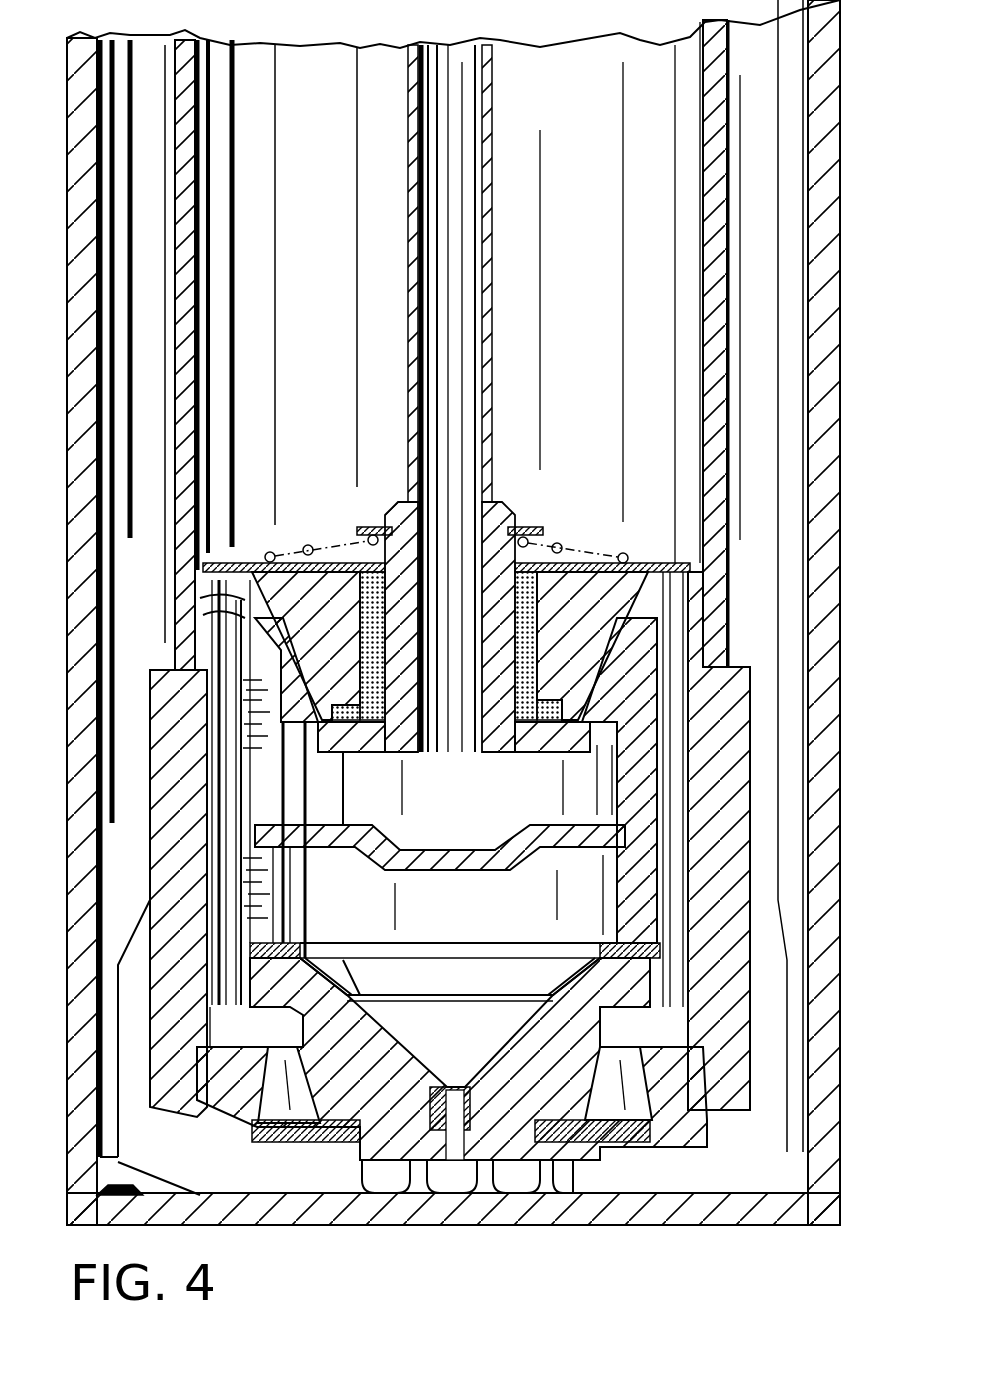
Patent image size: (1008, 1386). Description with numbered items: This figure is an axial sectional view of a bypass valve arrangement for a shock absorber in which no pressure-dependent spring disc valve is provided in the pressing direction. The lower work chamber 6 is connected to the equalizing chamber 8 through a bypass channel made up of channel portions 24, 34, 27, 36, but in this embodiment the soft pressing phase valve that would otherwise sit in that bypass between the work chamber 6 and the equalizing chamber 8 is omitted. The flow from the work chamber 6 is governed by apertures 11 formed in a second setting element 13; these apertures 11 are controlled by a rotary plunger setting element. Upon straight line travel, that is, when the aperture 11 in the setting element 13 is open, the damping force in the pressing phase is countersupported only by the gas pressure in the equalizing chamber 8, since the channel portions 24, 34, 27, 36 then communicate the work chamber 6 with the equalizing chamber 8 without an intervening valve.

The work chamber 6 is at (683, 100).
The equalizing chamber 8 is at (765, 172).
The apertures 11 is at (240, 625).
The second setting element 13 is at (718, 815).
The channel portion 24 is at (218, 681).
The channel portion 27 is at (545, 882).
The channel portion 34 is at (255, 880).
The channel portion 36 is at (455, 1162).